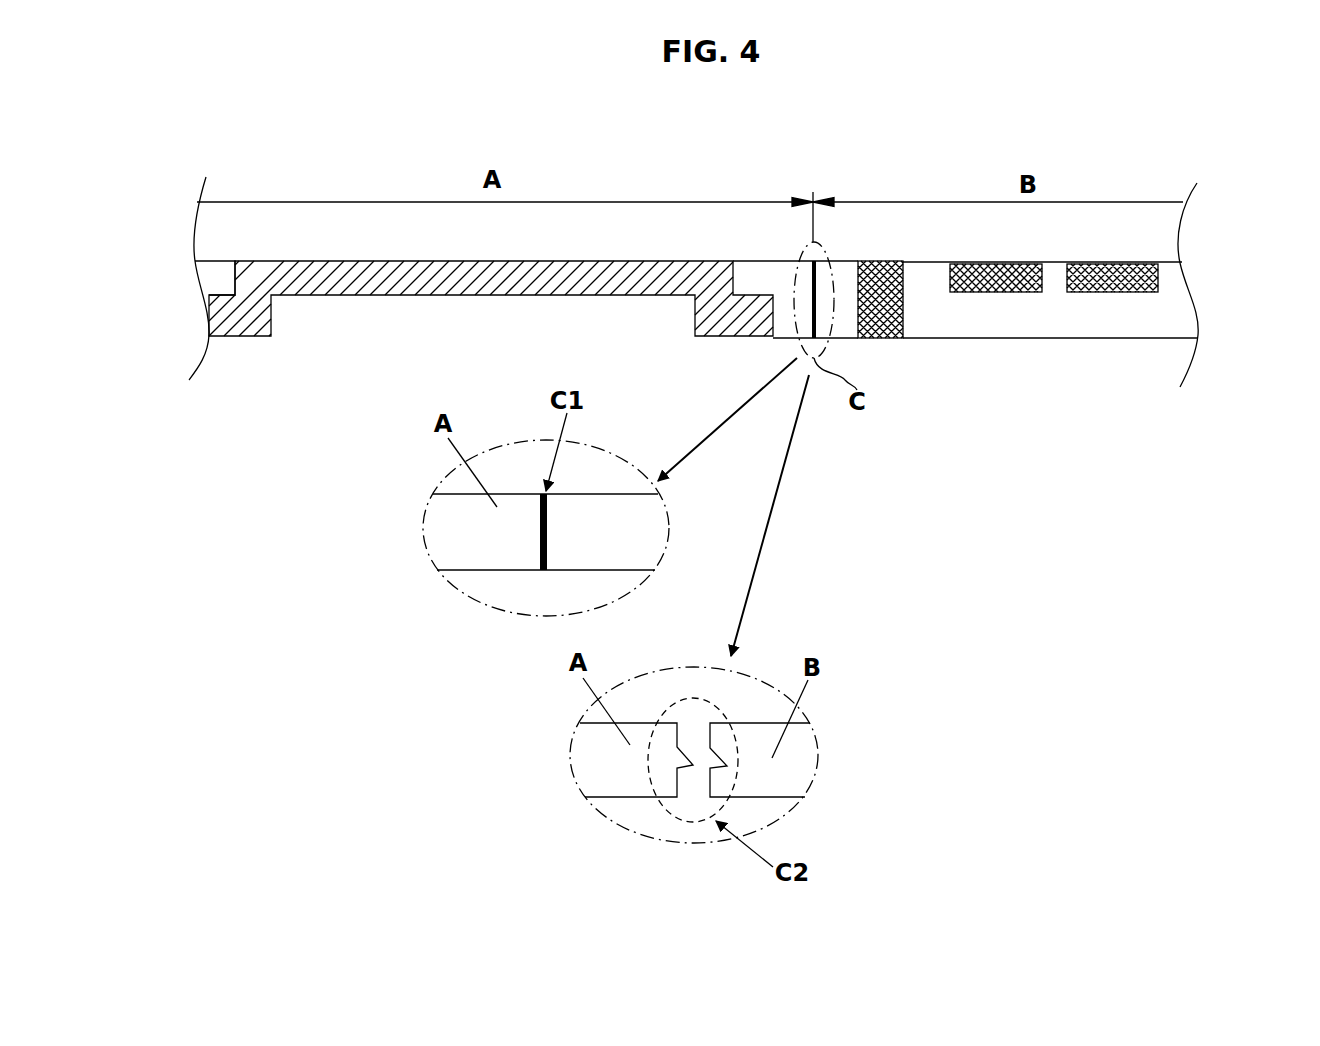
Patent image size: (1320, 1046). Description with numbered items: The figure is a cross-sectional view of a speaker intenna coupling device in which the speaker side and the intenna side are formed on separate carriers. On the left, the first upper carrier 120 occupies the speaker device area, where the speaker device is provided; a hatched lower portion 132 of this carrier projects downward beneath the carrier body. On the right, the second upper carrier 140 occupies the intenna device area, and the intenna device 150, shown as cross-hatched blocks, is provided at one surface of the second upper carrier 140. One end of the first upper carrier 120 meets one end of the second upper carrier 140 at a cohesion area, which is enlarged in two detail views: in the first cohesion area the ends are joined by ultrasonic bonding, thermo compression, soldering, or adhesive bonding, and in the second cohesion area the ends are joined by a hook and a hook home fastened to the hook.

The first upper carrier 120 is at (217, 280).
The sealing member 132 is at (243, 320).
The second upper carrier 140 is at (1170, 320).
The intenna device 150 is at (1103, 292).